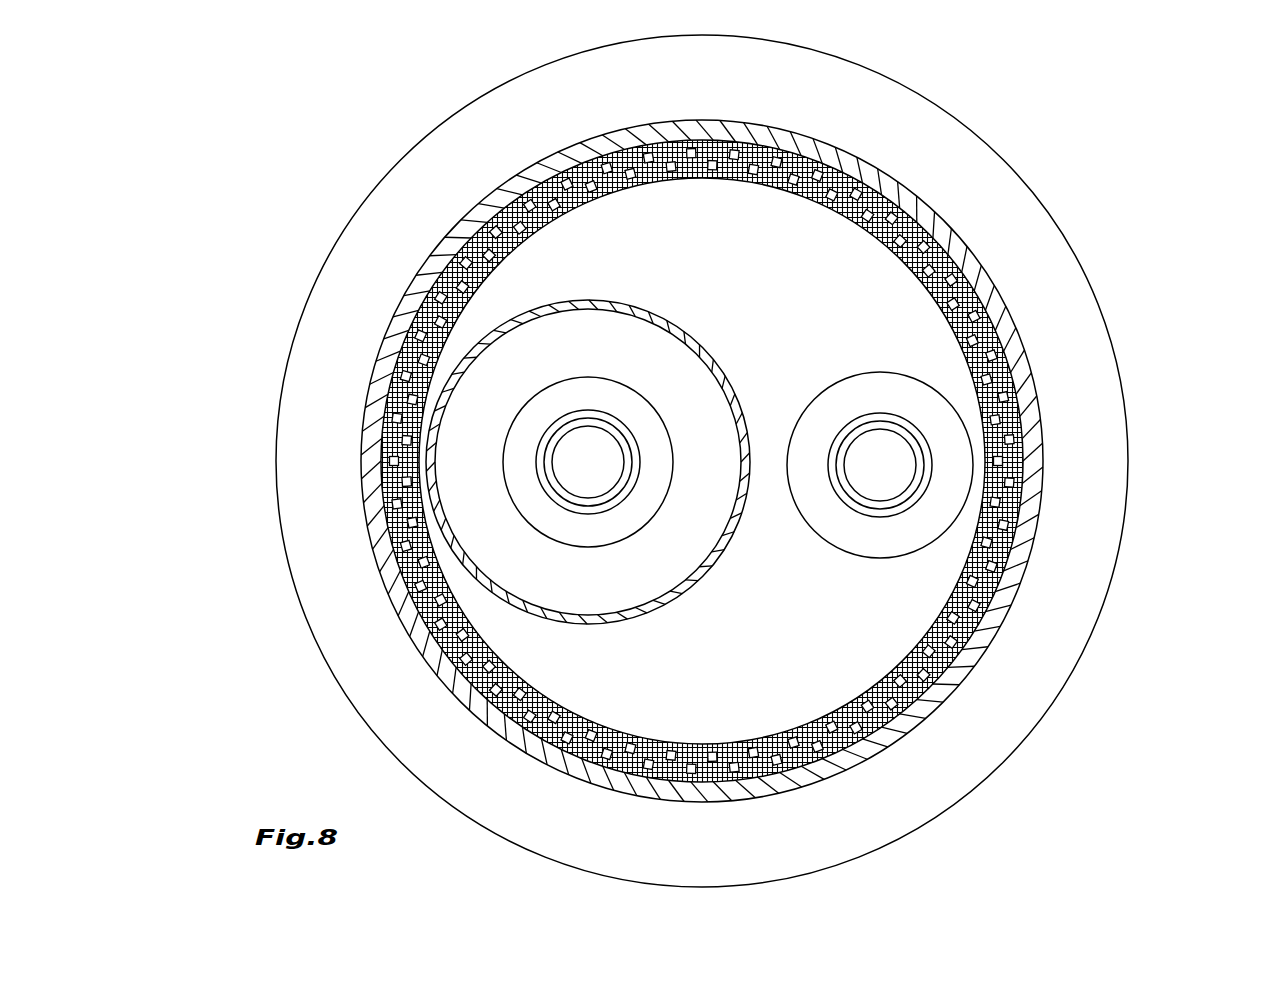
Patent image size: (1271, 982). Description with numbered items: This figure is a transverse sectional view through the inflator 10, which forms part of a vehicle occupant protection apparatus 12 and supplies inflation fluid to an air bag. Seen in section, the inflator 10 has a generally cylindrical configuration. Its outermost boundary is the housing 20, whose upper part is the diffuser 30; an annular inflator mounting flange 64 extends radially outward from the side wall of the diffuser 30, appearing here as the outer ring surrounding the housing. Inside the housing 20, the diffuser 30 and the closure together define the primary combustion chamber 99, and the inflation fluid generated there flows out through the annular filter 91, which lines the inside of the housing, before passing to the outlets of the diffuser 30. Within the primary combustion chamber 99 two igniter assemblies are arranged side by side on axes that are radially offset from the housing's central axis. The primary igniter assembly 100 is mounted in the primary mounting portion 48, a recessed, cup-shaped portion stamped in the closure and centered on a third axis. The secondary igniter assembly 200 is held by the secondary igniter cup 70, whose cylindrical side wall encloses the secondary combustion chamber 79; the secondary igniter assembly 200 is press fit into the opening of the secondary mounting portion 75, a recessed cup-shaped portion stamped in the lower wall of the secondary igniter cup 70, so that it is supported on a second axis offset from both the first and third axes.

The inflator 10 is at (719, 461).
The vehicle occupant protection apparatus 12 is at (1090, 95).
The housing 20 is at (865, 158).
The diffuser 30 is at (1015, 372).
The primary mounting portion 48 is at (877, 398).
The inflator mounting flange 64 is at (1057, 298).
The secondary igniter cup 70 is at (700, 342).
The secondary mounting portion 75 is at (572, 398).
The secondary combustion chamber 79 is at (470, 487).
The annular filter 91 is at (1025, 444).
The primary combustion chamber 99 is at (703, 210).
The primary igniter assembly 100 is at (859, 522).
The secondary igniter assembly 200 is at (637, 449).